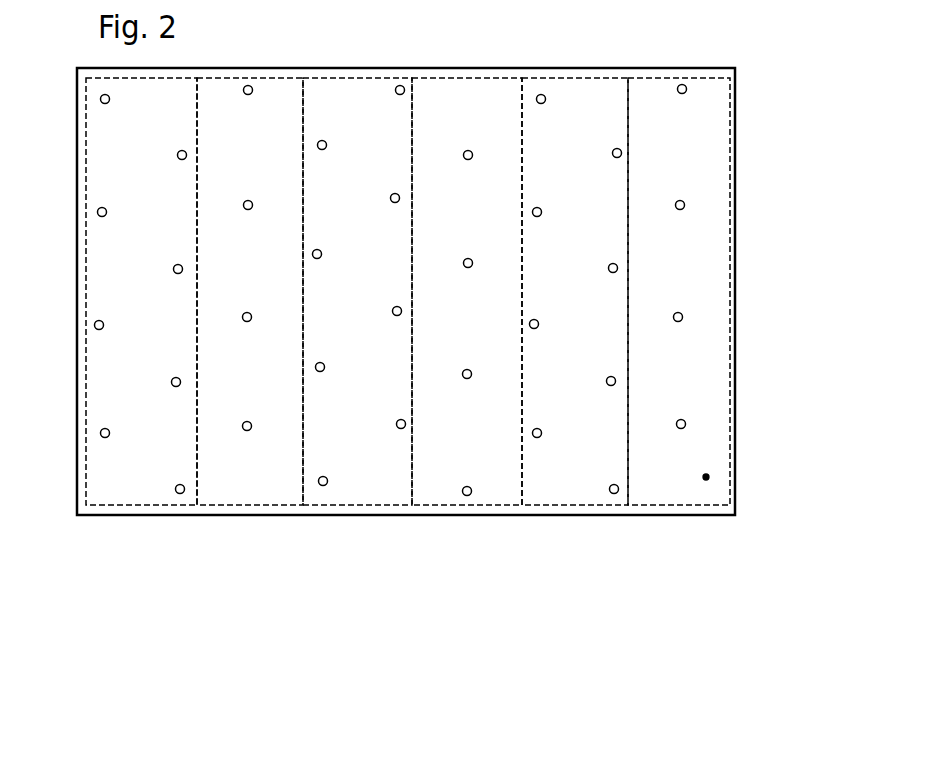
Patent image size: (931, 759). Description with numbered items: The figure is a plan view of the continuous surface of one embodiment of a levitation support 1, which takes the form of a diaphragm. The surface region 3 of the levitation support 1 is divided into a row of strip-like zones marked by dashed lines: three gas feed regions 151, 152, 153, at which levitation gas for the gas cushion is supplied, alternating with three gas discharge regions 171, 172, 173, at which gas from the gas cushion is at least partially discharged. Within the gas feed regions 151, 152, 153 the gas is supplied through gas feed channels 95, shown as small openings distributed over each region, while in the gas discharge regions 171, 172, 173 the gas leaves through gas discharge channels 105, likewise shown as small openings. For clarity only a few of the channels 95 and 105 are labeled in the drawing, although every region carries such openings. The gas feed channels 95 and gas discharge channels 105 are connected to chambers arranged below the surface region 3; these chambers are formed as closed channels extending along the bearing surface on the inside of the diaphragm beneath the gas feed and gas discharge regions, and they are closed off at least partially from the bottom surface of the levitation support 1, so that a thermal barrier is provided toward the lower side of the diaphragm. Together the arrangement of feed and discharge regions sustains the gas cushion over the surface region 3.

The levitation support 1 is at (742, 47).
The surface region 3 is at (706, 480).
The gas feed channels 95 is at (101, 103).
The gas discharge channels 105 is at (250, 200).
The gas feed region 151 is at (125, 505).
The gas feed region 152 is at (343, 505).
The gas feed region 153 is at (558, 505).
The gas discharge region 171 is at (242, 505).
The gas discharge region 172 is at (460, 505).
The gas discharge region 173 is at (672, 505).